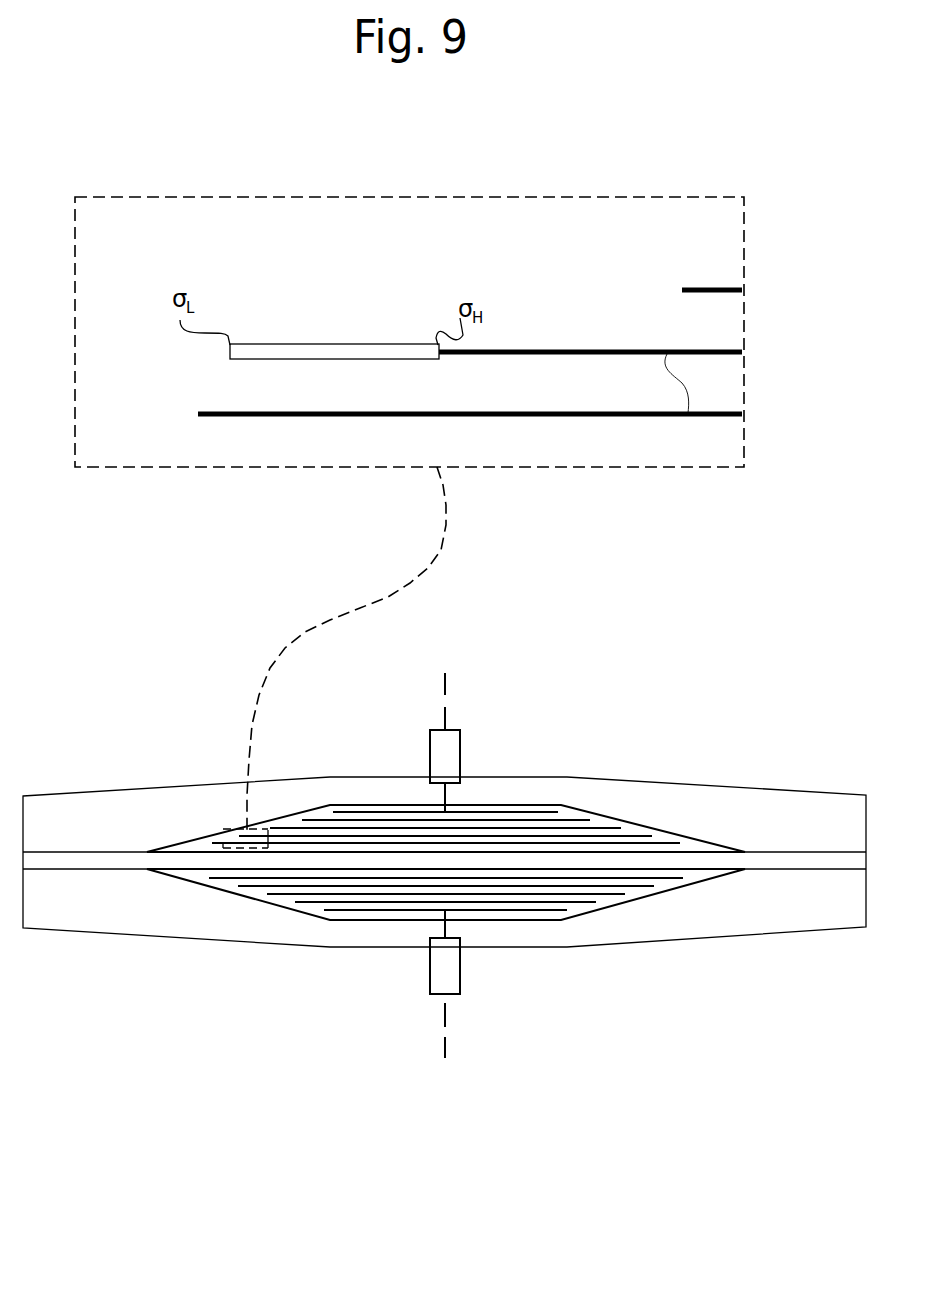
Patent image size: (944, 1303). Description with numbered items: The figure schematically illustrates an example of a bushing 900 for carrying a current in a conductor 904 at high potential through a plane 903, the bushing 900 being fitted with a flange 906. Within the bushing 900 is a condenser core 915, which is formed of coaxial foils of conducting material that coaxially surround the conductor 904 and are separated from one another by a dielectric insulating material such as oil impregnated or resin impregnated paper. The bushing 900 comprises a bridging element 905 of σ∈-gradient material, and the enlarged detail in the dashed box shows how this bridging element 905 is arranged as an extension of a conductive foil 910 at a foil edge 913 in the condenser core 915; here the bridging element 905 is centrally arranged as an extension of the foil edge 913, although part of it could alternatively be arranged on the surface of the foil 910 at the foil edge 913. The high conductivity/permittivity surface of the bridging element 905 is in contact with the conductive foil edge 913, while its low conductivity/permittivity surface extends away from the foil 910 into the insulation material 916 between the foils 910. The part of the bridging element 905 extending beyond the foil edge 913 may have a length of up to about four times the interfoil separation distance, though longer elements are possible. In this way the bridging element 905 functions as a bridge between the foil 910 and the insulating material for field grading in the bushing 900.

The bushing 900 is at (680, 1069).
The plane 903 is at (442, 1036).
The conductor 904 is at (805, 872).
The bridging element 905 is at (335, 344).
The flange 906 is at (460, 755).
The conductive foil 910 is at (285, 893).
The foil edge 913 is at (718, 293).
The condenser core 915 is at (648, 827).
The insulation material 916 is at (617, 383).